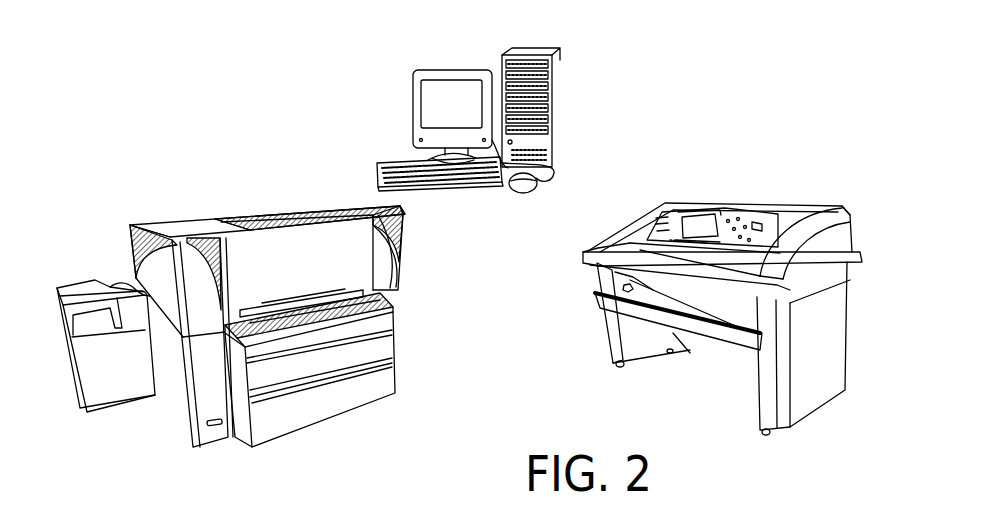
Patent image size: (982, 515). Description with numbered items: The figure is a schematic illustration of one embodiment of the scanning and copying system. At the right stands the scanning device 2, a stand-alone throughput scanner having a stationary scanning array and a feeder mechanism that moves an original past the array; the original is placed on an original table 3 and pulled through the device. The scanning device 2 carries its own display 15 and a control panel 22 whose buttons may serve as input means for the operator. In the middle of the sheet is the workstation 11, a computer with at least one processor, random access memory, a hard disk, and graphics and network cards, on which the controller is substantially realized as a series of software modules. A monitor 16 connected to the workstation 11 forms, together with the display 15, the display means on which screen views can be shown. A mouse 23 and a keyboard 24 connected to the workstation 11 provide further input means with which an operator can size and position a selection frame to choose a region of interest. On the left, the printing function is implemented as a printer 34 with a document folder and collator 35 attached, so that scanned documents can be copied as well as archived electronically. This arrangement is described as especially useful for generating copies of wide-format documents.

The scanning device 2 is at (802, 167).
The original table 3 is at (629, 242).
The workstation 11 is at (560, 131).
The display 15 is at (706, 206).
The monitor 16 is at (452, 66).
The control panel 22 is at (664, 204).
The mouse 23 is at (527, 204).
The keyboard 24 is at (456, 198).
The printer 34 is at (215, 210).
The document folder and collator 35 is at (72, 274).